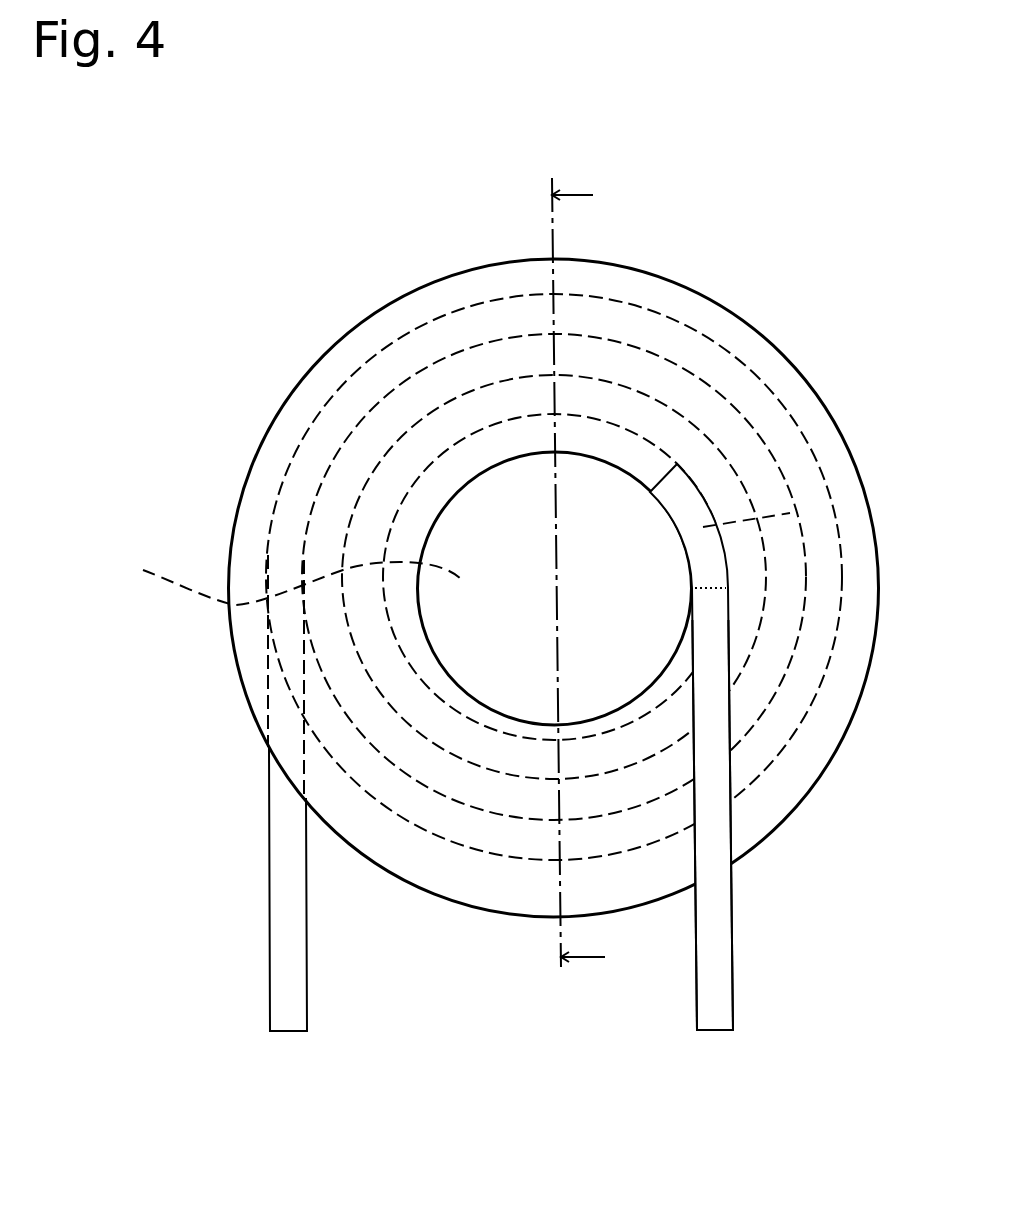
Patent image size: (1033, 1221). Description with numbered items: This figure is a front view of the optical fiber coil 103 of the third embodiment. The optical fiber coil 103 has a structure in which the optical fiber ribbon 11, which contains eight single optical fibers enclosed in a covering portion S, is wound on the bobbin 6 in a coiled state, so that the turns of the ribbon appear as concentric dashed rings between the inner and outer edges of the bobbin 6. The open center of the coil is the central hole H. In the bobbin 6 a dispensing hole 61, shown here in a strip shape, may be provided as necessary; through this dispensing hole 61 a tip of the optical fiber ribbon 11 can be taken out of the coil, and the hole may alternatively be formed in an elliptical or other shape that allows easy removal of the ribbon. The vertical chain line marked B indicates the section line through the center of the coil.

The bobbin 6 is at (870, 578).
The dispensing hole 61 is at (703, 527).
The optical fiber ribbon 11 is at (697, 966).
The optical fiber coil 103 is at (793, 873).
The covering portion S is at (727, 953).
The central hole H is at (284, 580).
The section line B- B is at (572, 574).